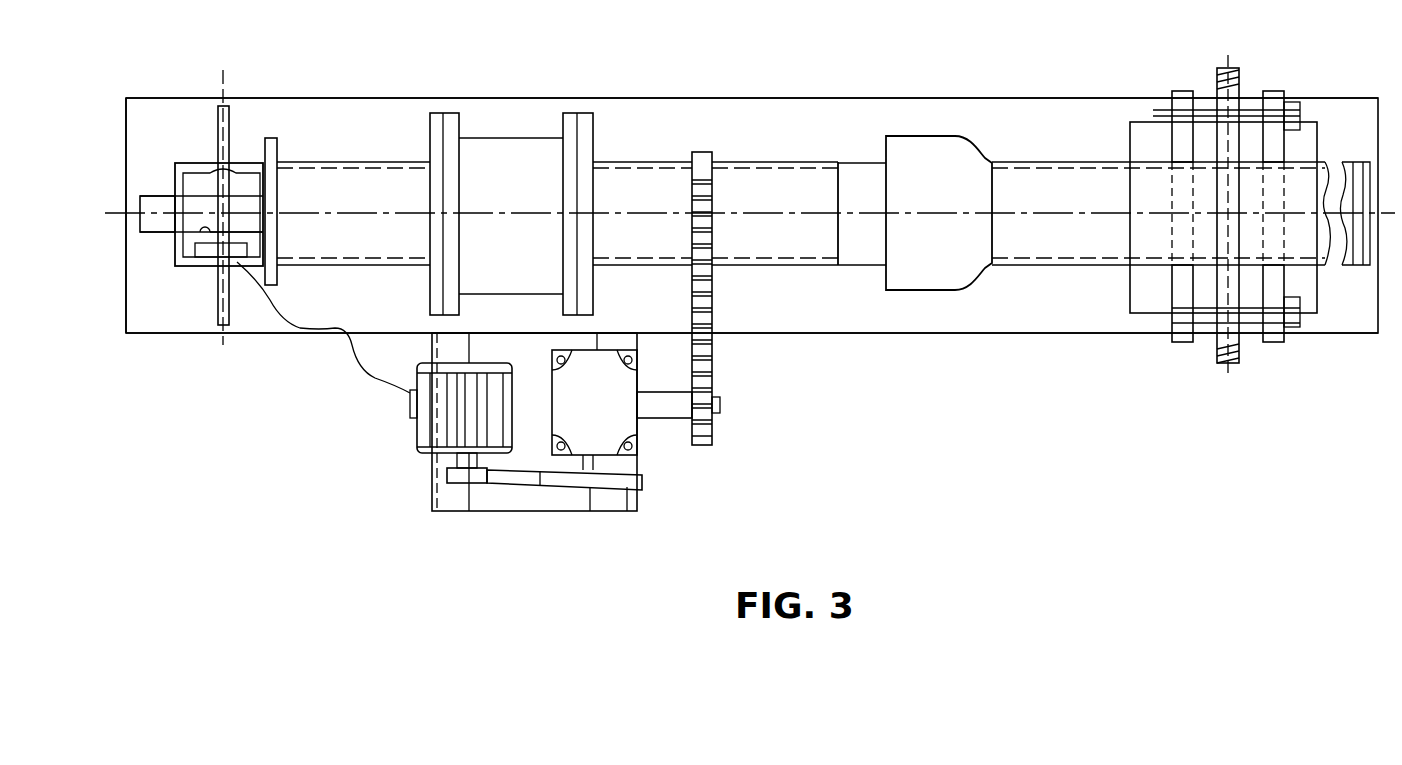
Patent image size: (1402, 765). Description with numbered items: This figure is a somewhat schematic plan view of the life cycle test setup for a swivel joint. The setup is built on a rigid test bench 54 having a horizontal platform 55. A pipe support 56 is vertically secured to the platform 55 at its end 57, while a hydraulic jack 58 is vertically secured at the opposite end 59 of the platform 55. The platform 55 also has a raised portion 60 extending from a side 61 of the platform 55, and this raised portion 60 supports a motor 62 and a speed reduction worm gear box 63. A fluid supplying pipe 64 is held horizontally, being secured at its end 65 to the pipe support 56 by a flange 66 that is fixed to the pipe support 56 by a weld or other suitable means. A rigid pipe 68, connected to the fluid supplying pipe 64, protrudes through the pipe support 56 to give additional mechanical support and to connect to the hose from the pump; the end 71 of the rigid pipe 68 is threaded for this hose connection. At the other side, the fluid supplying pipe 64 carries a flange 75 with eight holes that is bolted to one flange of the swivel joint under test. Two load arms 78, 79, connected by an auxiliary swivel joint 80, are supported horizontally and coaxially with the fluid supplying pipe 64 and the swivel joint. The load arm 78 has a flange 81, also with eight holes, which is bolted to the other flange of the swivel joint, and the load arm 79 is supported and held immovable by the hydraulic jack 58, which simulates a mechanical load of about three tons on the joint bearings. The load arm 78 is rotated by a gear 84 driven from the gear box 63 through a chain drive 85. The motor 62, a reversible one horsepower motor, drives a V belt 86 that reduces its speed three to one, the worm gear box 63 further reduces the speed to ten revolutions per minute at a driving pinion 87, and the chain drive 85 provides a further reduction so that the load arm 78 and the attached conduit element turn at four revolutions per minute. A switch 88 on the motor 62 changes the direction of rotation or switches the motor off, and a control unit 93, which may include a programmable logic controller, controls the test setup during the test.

The rigid test bench 54 is at (392, 98).
The horizontal platform 55 is at (1060, 116).
The pipe support 56 is at (190, 165).
The end of the platform 57 is at (152, 320).
The hydraulic jack 58 is at (1283, 330).
The opposite end of the platform 59 is at (1342, 118).
The raised portion 60 is at (527, 437).
The side of the platform 61 is at (863, 333).
The motor 62 is at (447, 423).
The speed reduction worm gear box 63 is at (202, 236).
The fluid supplying pipe 64 is at (318, 162).
The end of the fluid supplying pipe 65 is at (284, 180).
The flange 66 is at (237, 262).
The rigid pipe 68 is at (160, 200).
The end of the rigid pipe 71 is at (140, 232).
The flange 75 is at (434, 116).
The load arm 78 is at (643, 176).
The load arm 79 is at (1040, 243).
The auxiliary swivel joint 80 is at (928, 158).
The flange 81 is at (586, 116).
The gear 84 is at (743, 246).
The chain drive 85 is at (714, 306).
The V belt 86 is at (534, 486).
The driving pinion 87 is at (668, 410).
The switch 88 is at (413, 420).
The control unit 93 is at (219, 250).